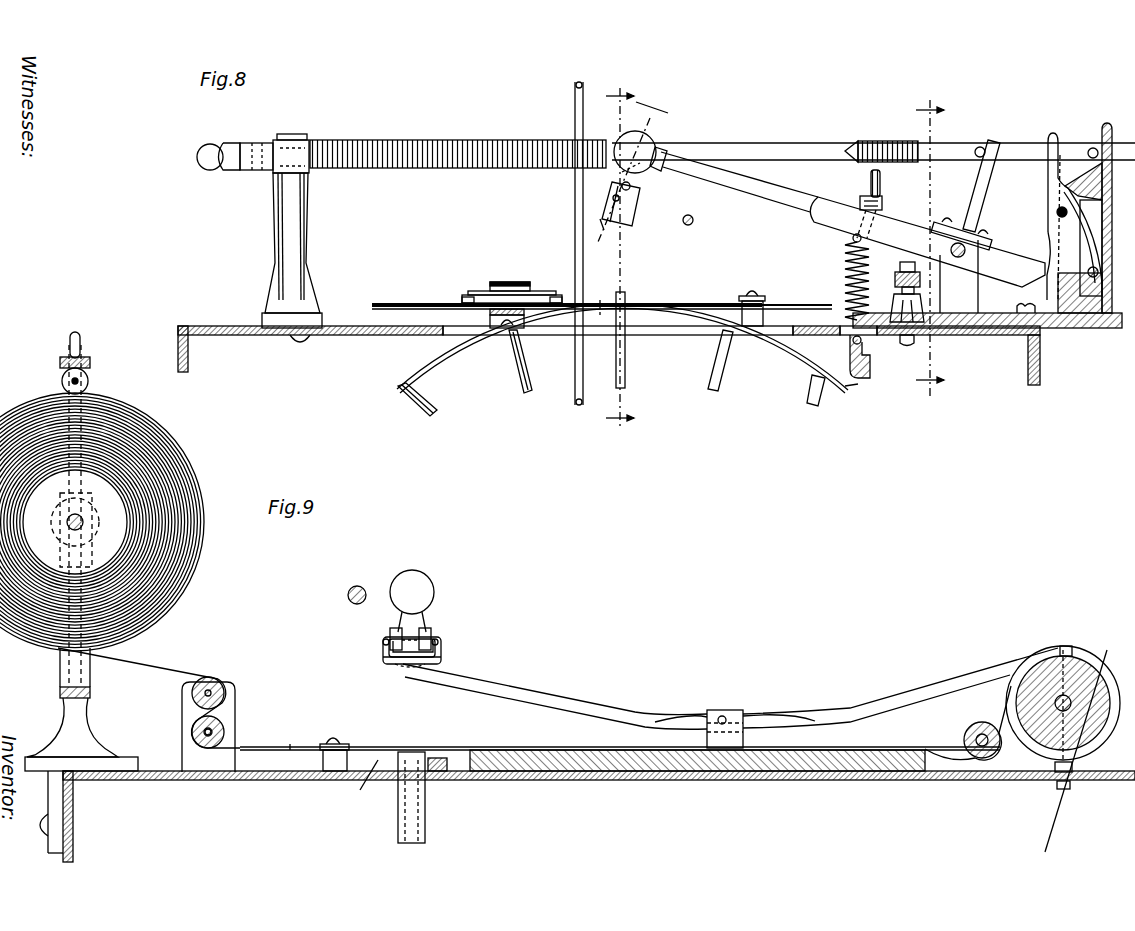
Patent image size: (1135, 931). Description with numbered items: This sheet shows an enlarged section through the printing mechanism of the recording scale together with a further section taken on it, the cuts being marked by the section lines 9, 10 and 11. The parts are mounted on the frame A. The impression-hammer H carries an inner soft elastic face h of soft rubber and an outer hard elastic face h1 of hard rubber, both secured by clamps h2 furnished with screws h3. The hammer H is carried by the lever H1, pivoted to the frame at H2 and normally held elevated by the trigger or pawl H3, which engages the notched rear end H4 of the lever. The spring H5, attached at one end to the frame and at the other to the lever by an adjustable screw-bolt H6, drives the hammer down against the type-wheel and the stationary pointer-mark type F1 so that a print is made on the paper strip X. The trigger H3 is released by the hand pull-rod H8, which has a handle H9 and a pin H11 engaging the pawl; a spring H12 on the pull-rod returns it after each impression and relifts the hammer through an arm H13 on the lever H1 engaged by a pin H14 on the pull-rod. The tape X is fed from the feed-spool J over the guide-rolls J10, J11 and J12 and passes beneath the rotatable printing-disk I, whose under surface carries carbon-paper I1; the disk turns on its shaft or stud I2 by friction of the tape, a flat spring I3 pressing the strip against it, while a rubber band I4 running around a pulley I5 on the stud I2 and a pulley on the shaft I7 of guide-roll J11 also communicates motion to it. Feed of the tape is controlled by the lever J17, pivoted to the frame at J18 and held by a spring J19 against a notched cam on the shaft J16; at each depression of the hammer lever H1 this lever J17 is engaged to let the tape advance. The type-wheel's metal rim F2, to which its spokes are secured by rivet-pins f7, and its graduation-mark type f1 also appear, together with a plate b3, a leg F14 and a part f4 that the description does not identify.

In FIG. 8, the frame A is at (609, 355).
In FIG. 9, the frame A is at (75, 818).
In FIG. 8, the impression-hammer H is at (640, 152).
In FIG. 9, the impression-hammer H is at (412, 601).
In FIG. 8, the impression-hammer lever H1 is at (756, 194).
In FIG. 8, the lever pivot H2 is at (966, 254).
In FIG. 8, the trigger or pawl H3 is at (1050, 175).
In FIG. 8, the notched rear end of lever H4 is at (1037, 295).
In FIG. 8, the spring H5 is at (848, 254).
In FIG. 8, the adjustable screw-bolt H6 is at (882, 195).
In FIG. 8, the hand slide or pull-rod H8 is at (400, 140).
In FIG. 9, the hand slide or pull-rod H8 is at (358, 585).
In FIG. 8, the handle H9 is at (200, 167).
In FIG. 8, the pin or projection H11 is at (1091, 147).
In FIG. 8, the spring on pull-rod H12 is at (457, 140).
In FIG. 8, the arm H13 is at (980, 196).
In FIG. 8, the pin or projection on pull-rod H14 is at (980, 146).
In FIG. 8, the inner soft elastic face h is at (868, 194).
In FIG. 9, the inner soft elastic face h is at (382, 651).
In FIG. 8, the outer hard elastic face h1 is at (628, 222).
In FIG. 9, the outer hard elastic face h1 is at (444, 656).
In FIG. 8, the clamps h2 is at (638, 183).
In FIG. 9, the clamps h2 is at (452, 618).
In FIG. 8, the screws h3 is at (636, 194).
In FIG. 9, the screws h3 is at (440, 645).
In FIG. 8, the vertical plate b3 is at (578, 82).
In FIG. 8, the section line 9 9 is at (620, 258).
In FIG. 8, the section line 10 10 is at (930, 245).
In FIG. 8, the section line 11 11 is at (633, 169).
In FIG. 8, the printing-disk I is at (423, 306).
In FIG. 9, the printing-disk I is at (424, 749).
In FIG. 8, the carbon-paper I1 is at (436, 307).
In FIG. 9, the carbon-paper I1 is at (365, 783).
In FIG. 8, the shaft or stud I2 is at (507, 282).
In FIG. 8, the flat spring I3 is at (708, 303).
In FIG. 9, the flat spring I3 is at (320, 756).
In FIG. 8, the cord or belt I4 is at (470, 295).
In FIG. 8, the pulley I5 is at (545, 293).
In FIG. 9, the shaft of guide-roller I7 is at (194, 722).
In FIG. 8, the stationary pointer-mark type F1 is at (626, 322).
In FIG. 8, the metal rim F2 is at (406, 398).
In FIG. 8, the bow leg F14 is at (713, 374).
In FIG. 8, the graduation-mark type f1 is at (863, 385).
In FIG. 8, the bow leg f4 is at (808, 379).
In FIG. 8, the rivet-pins f7 is at (433, 387).
In FIG. 8, the paper strip or recording-tape X is at (597, 326).
In FIG. 9, the paper strip or recording-tape X is at (291, 745).
In FIG. 9, the feed reel or spool J is at (200, 551).
In FIG. 9, the guide-roll J10 is at (222, 680).
In FIG. 9, the guide-roll J11 is at (230, 706).
In FIG. 9, the guide-roll J12 is at (982, 724).
In FIG. 9, the shaft J16 is at (1105, 655).
In FIG. 9, the lever J17 is at (470, 676).
In FIG. 9, the lever pivot J18 is at (727, 720).
In FIG. 9, the spring J19 is at (1072, 648).